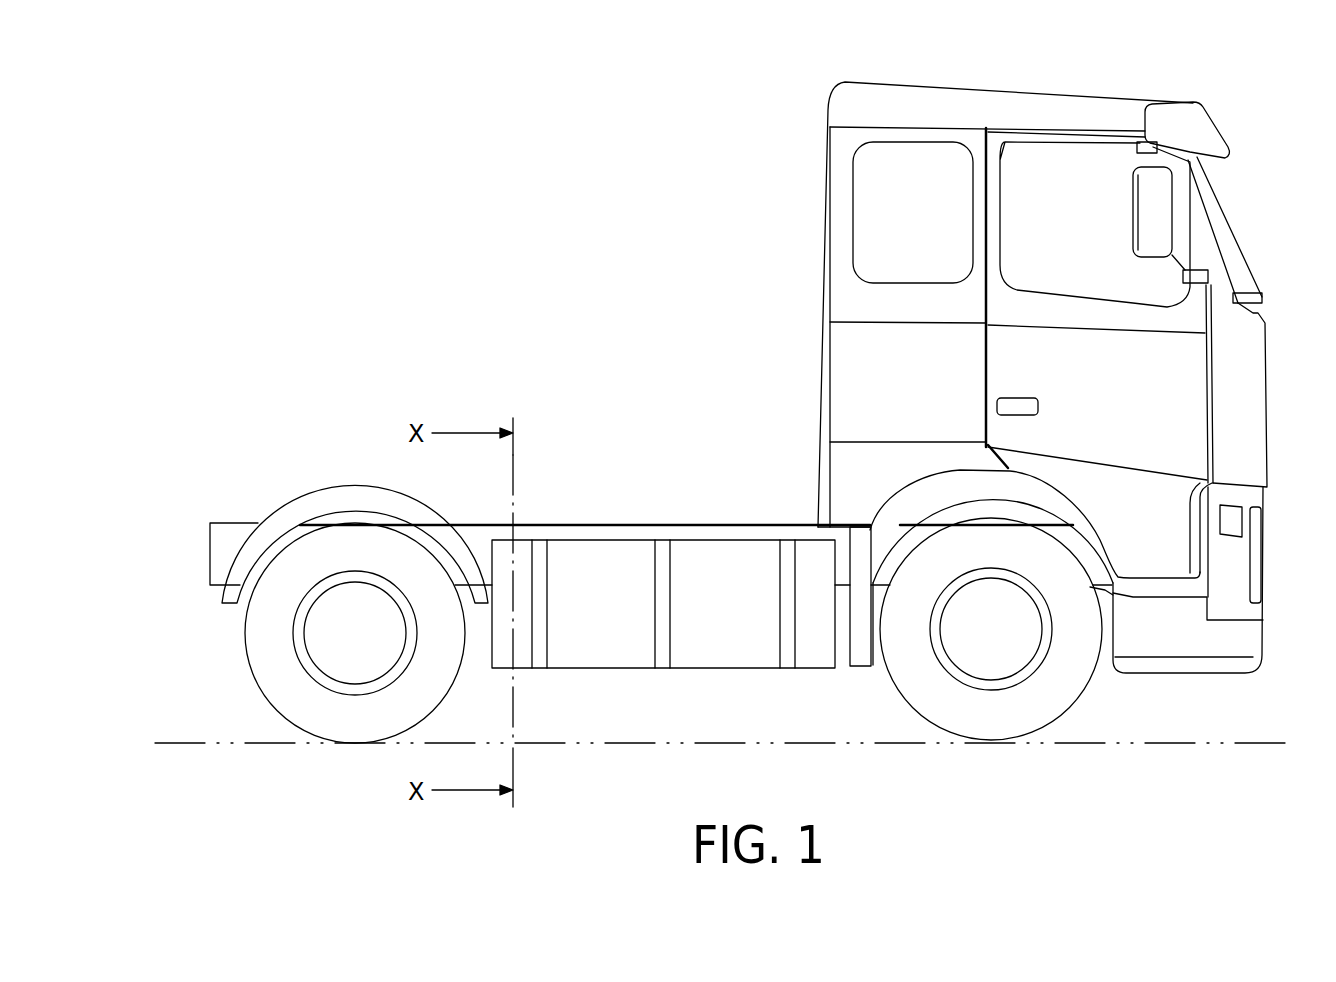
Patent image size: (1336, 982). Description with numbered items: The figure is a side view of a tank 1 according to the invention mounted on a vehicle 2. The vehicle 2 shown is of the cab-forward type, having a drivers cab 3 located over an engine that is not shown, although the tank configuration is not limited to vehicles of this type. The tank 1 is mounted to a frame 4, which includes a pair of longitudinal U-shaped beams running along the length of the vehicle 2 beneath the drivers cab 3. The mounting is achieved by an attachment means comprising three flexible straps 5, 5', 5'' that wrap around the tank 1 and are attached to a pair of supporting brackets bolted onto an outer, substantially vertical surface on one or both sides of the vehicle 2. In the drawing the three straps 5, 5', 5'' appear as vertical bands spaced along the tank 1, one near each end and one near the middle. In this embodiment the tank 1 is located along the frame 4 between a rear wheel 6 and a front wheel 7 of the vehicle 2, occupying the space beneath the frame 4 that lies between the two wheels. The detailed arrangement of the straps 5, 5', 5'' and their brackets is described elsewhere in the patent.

The tank 1 is at (757, 547).
The vehicle 2 is at (538, 206).
The drivers cab 3 is at (855, 103).
The frame 4 is at (218, 528).
The flexible strap 5 is at (486, 662).
The flexible strap 5' is at (625, 663).
The flexible strap 5'' is at (843, 664).
The rear wheel 6 is at (267, 683).
The front wheel 7 is at (1073, 688).